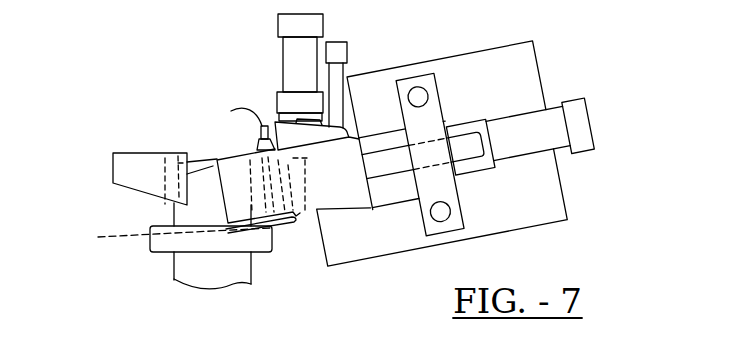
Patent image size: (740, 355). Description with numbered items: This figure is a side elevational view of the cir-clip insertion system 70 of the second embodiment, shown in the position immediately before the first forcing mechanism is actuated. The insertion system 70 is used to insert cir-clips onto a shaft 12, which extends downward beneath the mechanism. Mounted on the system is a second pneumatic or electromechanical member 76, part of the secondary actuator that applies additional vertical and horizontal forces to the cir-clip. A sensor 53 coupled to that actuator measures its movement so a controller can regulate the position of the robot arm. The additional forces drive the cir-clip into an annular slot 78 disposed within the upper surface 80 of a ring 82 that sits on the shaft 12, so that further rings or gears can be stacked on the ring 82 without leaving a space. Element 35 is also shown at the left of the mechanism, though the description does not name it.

The shaft 12 is at (233, 284).
The workpiece 35 is at (128, 173).
The sensor 53 is at (340, 51).
The insertion system 70 is at (454, 36).
The second pneumatic or electromechanical member 76 is at (293, 62).
The annular slot 78 is at (170, 230).
The upper surface 80 is at (156, 226).
The ring 82 is at (160, 253).